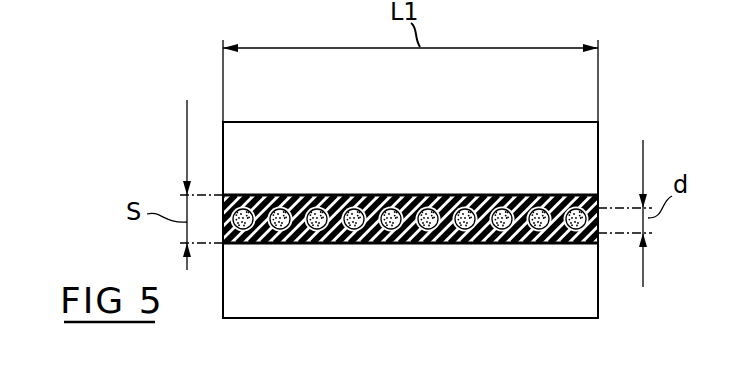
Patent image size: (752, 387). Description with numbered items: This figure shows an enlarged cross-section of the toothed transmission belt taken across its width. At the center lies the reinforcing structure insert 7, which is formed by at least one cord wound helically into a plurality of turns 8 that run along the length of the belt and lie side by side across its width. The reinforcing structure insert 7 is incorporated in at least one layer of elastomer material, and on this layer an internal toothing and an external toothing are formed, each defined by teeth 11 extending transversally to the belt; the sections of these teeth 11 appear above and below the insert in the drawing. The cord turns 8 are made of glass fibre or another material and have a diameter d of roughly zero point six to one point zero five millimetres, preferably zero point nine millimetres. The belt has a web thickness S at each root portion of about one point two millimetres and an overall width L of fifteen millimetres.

The teeth 11 is at (391, 131).
The reinforcing structure insert 7 is at (415, 240).
The cord turns 8 is at (426, 210).